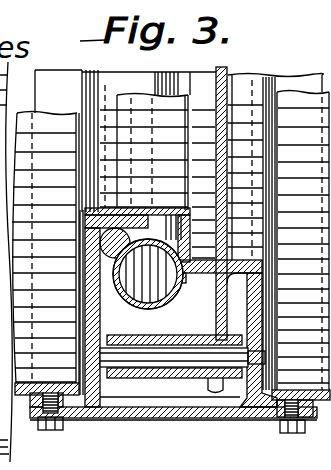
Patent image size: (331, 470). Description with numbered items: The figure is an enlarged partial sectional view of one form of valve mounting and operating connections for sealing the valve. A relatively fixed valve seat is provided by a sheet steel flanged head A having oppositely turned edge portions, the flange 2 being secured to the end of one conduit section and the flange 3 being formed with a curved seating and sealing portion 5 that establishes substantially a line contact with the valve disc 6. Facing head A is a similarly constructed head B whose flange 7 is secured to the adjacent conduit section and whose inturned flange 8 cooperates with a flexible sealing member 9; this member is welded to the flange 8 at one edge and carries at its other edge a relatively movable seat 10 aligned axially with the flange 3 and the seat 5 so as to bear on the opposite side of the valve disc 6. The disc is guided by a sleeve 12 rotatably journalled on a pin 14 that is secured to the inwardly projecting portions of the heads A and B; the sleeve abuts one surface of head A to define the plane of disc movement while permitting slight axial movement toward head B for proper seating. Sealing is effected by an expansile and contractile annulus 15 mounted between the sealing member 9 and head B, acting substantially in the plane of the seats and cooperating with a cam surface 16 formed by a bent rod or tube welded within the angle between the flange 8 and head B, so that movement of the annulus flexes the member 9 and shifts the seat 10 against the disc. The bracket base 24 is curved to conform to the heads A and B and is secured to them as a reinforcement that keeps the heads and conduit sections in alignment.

The flange 2 is at (276, 425).
The flange 3 is at (268, 253).
The curved seating and sealing portion 5 is at (203, 275).
The valve disc 6 is at (229, 70).
The flange 7 is at (36, 422).
The flange 8 is at (82, 197).
The flexible sealing member 9 is at (160, 207).
The relatively movable seat 10 is at (165, 308).
The sleeve 12 is at (173, 370).
The pin 14 is at (137, 353).
The expansile and contractile annulus 15 is at (127, 300).
The cam surface 16 is at (87, 248).
The base 24 is at (230, 420).
The flanged head A is at (268, 301).
The head B is at (82, 305).